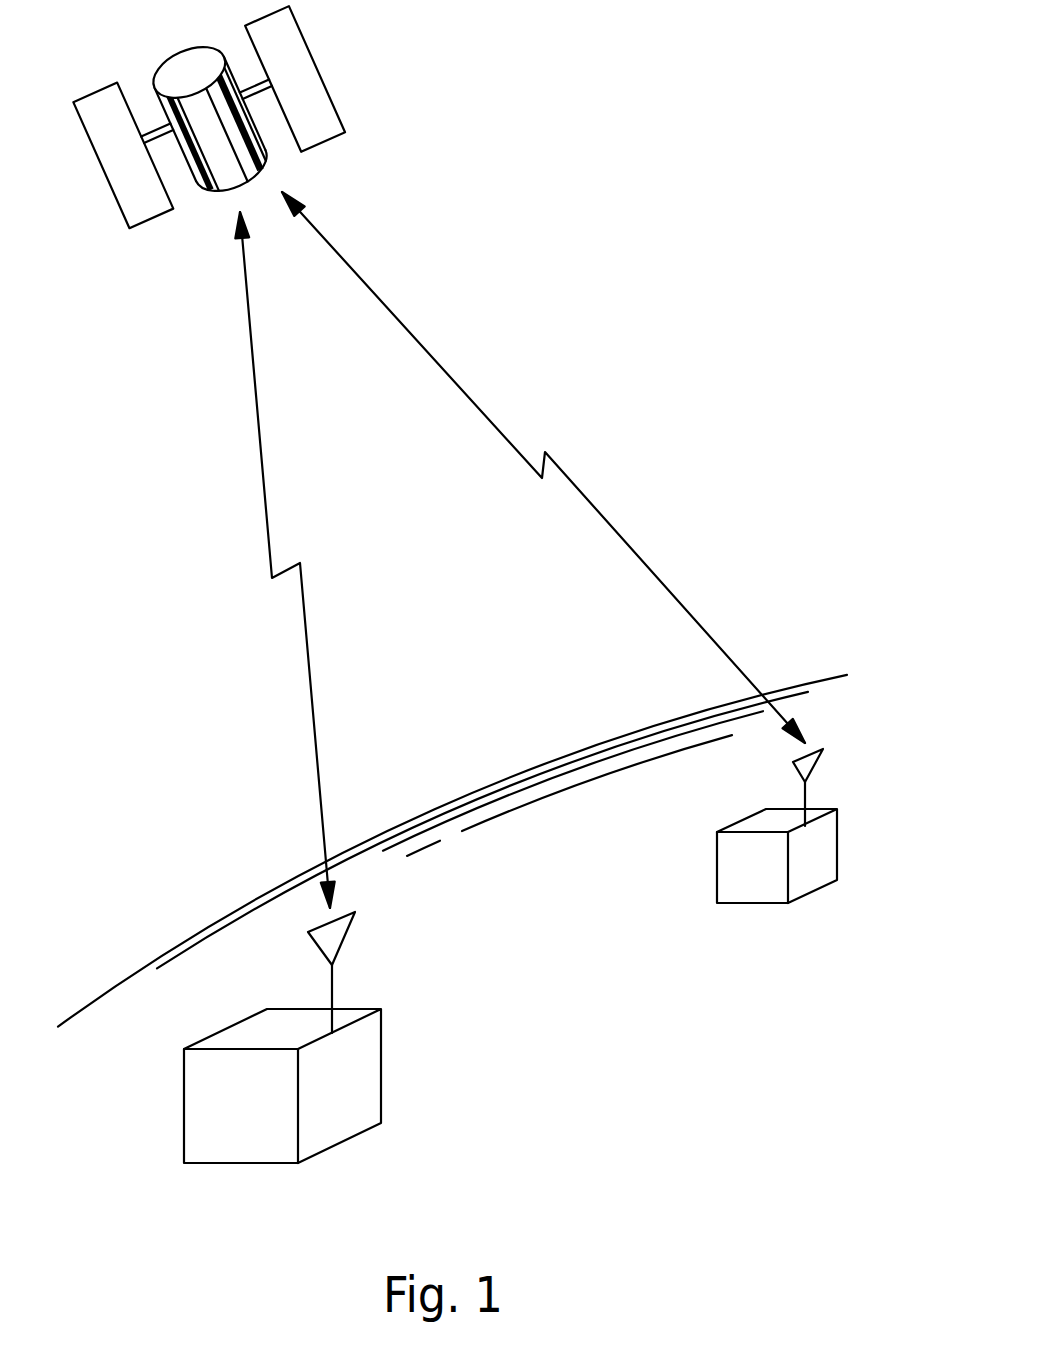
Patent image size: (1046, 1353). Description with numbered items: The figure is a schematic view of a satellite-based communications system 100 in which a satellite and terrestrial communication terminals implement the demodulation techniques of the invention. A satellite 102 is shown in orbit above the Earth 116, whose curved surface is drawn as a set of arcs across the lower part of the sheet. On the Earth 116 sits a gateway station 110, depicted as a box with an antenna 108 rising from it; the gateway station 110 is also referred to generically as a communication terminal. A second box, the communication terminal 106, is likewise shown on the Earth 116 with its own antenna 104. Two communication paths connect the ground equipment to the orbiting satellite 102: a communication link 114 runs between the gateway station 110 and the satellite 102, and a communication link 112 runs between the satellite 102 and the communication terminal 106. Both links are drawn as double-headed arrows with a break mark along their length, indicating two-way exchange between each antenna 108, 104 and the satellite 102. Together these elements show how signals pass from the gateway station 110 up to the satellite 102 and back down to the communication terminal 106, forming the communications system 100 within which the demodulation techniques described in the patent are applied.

The satellite-based communications system 100 is at (520, 140).
The satellite 102 is at (168, 68).
The antenna 104 is at (797, 775).
The communication terminal 106 is at (807, 882).
The antenna 108 is at (340, 946).
The gateway station 110 is at (347, 1090).
The communication link 112 is at (475, 402).
The communication link 114 is at (265, 478).
The Earth 116 is at (228, 915).